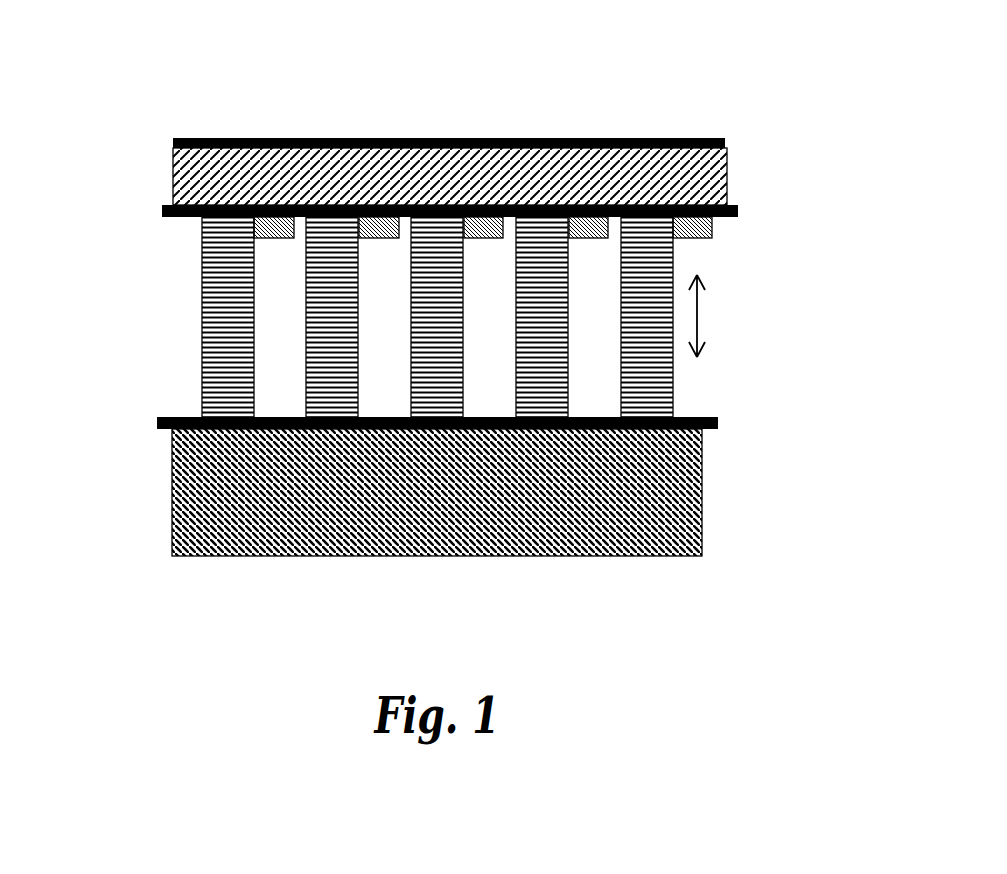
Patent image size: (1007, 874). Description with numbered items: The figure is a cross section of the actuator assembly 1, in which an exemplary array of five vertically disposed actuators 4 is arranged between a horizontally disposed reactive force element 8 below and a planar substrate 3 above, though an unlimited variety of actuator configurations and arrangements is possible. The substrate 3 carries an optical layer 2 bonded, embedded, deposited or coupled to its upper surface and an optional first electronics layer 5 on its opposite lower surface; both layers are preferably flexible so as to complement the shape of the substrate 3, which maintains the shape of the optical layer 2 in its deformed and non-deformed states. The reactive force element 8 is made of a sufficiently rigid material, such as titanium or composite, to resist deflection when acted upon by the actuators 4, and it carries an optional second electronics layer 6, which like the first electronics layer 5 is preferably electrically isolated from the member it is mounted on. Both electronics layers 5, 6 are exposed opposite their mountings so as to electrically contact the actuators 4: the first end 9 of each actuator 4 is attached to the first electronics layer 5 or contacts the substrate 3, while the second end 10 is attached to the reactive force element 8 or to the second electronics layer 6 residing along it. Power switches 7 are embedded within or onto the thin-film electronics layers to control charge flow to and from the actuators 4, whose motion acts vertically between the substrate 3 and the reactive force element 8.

The actuator device 1 is at (651, 99).
The optical layer 2 is at (202, 130).
The substrate 3 is at (200, 172).
The actuator 4 is at (673, 383).
The first electronics layer 5 is at (163, 212).
The second electronics layer 6 is at (157, 428).
The power switch 7 is at (712, 229).
The reactive force element 8 is at (702, 487).
The first end 9 is at (188, 224).
The second end 10 is at (190, 411).